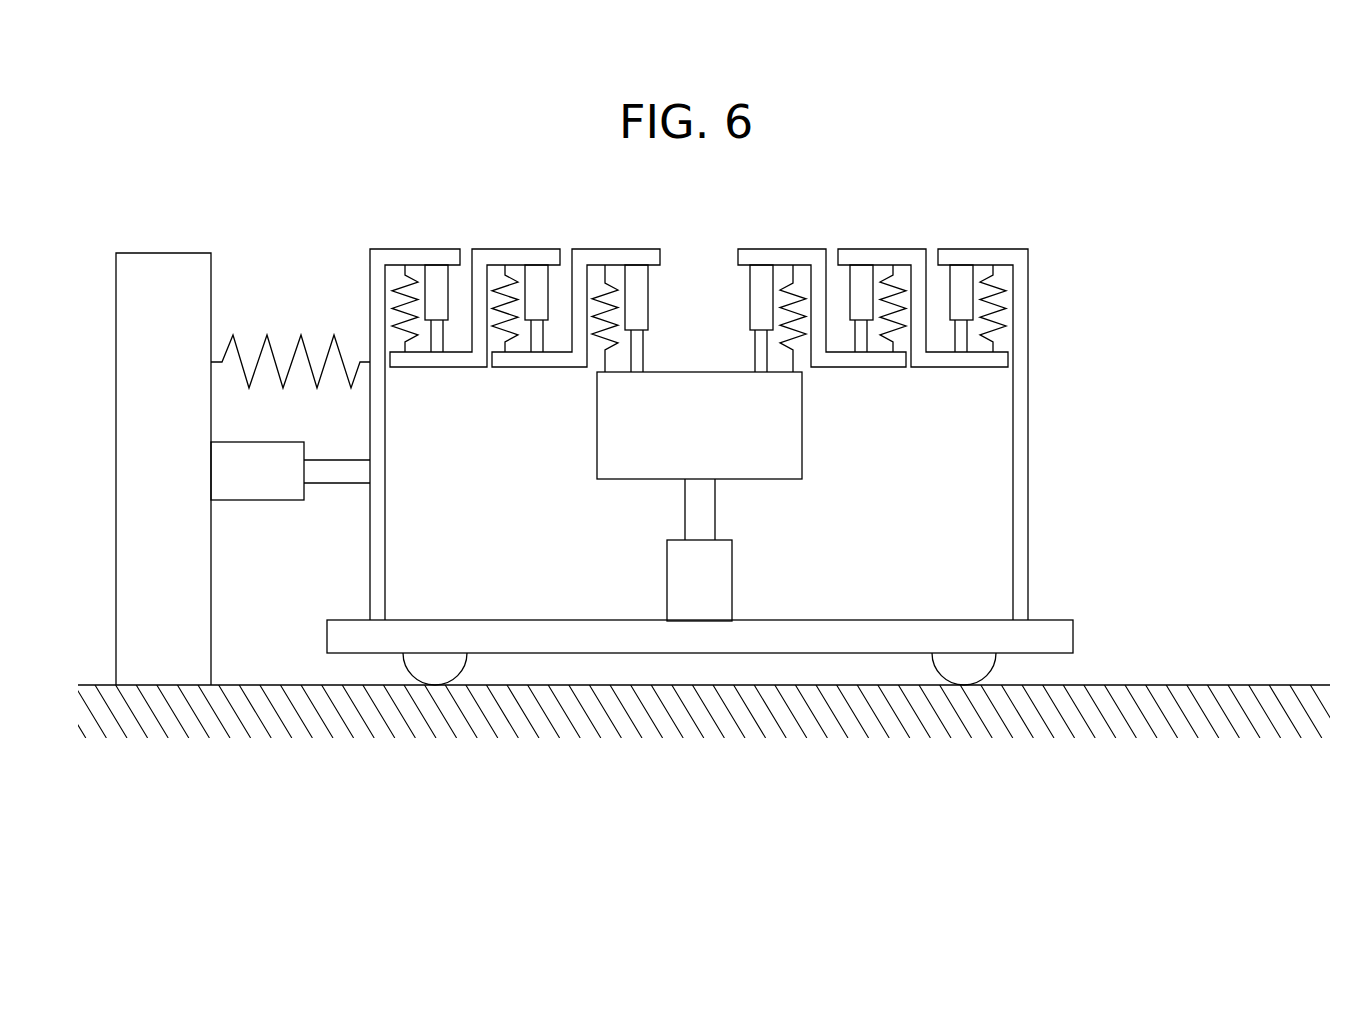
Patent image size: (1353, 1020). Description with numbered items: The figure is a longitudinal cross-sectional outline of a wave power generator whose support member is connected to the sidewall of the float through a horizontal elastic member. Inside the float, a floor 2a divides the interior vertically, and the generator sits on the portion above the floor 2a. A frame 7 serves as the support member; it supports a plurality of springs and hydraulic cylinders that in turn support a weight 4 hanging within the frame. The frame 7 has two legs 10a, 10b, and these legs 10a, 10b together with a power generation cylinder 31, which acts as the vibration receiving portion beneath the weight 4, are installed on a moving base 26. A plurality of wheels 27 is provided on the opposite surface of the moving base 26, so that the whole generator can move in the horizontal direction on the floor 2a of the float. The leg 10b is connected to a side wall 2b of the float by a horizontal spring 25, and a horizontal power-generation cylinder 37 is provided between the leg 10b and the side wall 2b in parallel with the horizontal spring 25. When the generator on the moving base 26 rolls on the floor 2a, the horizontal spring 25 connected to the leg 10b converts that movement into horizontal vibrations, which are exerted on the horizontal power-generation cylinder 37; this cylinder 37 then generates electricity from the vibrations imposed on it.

The floor 2a is at (1205, 683).
The side wall 2b is at (115, 418).
The weight 4 is at (802, 398).
The frame 7 is at (692, 434).
The leg 10a is at (1028, 450).
The leg 10b is at (370, 413).
The horizontal spring 25 is at (328, 348).
The moving base 26 is at (1050, 618).
The wheels 27 is at (434, 668).
The power generation cylinder 31 is at (732, 568).
The horizontal power-generation cylinder 37 is at (258, 500).